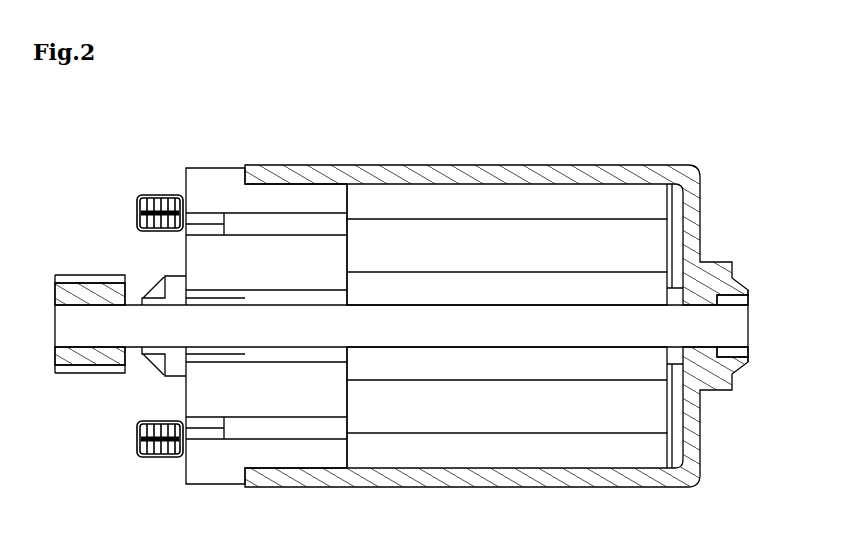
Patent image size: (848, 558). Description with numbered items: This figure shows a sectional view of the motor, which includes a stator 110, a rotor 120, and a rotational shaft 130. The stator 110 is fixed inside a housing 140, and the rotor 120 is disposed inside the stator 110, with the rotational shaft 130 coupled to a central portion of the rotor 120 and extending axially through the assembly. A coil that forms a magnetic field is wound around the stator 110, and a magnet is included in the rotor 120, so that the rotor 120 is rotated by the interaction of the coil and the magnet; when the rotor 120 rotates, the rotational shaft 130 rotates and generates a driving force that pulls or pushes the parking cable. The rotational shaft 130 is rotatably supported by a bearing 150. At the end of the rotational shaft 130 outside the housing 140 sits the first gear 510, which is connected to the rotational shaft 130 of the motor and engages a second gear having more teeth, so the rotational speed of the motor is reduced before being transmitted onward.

The stator 110 is at (610, 208).
The rotor 120 is at (520, 293).
The rotational shaft 130 is at (442, 330).
The housing 140 is at (303, 177).
The bearing 150 is at (740, 285).
The first gear 510 is at (78, 275).